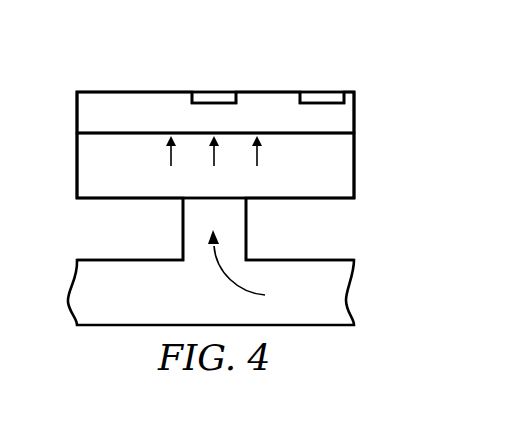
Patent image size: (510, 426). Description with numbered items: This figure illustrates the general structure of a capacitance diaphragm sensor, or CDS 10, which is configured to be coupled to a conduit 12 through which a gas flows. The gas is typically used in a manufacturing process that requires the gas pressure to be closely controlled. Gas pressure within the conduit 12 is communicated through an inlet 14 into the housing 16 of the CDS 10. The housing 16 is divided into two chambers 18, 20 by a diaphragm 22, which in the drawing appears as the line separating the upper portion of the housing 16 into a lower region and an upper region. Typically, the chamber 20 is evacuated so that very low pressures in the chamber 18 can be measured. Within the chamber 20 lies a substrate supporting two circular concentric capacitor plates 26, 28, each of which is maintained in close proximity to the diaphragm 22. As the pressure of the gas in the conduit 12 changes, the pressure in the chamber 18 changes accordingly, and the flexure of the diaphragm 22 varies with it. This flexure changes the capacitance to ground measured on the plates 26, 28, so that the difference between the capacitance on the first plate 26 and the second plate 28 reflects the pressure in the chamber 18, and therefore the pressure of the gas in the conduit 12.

The capacitance diaphragm sensor 10 is at (118, 60).
The conduit 12 is at (128, 260).
The inlet 14 is at (246, 230).
The housing 16 is at (356, 155).
The chamber 18 is at (83, 165).
The chamber 20 is at (83, 112).
The diaphragm 22 is at (295, 137).
The capacitor plate 26 is at (214, 98).
The capacitor plate 28 is at (322, 98).